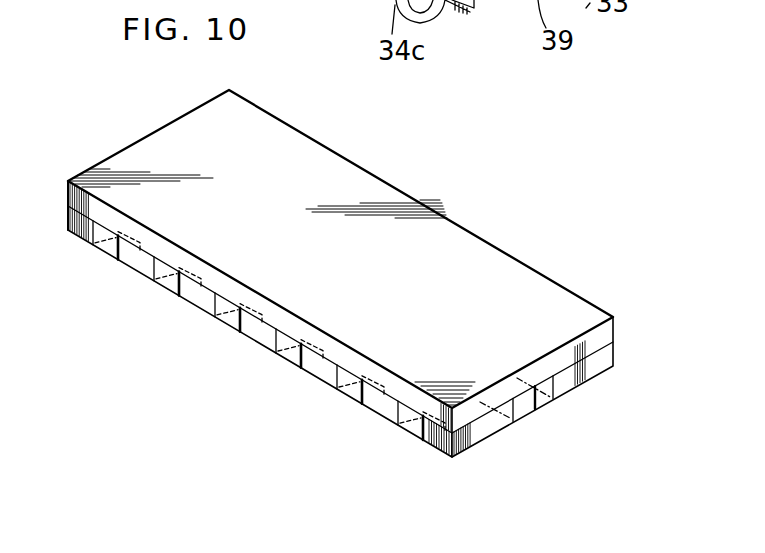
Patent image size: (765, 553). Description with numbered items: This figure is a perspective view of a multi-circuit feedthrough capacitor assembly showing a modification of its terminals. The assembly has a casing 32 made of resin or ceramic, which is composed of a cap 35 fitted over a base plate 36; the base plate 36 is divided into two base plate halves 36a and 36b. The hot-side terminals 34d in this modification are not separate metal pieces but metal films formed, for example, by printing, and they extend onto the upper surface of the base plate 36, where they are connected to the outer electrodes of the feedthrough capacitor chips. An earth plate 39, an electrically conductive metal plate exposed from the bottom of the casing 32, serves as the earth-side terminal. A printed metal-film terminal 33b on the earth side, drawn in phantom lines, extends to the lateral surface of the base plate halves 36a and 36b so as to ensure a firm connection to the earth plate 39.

The casing 32 is at (436, 202).
The cap 35 is at (96, 177).
The base plate 36 is at (65, 221).
The base plate half 36a is at (480, 434).
The base plate half 36b is at (597, 368).
The terminals 34d is at (412, 428).
The earth plate 39 is at (538, 407).
The terminal on the earth side 33b is at (555, 390).